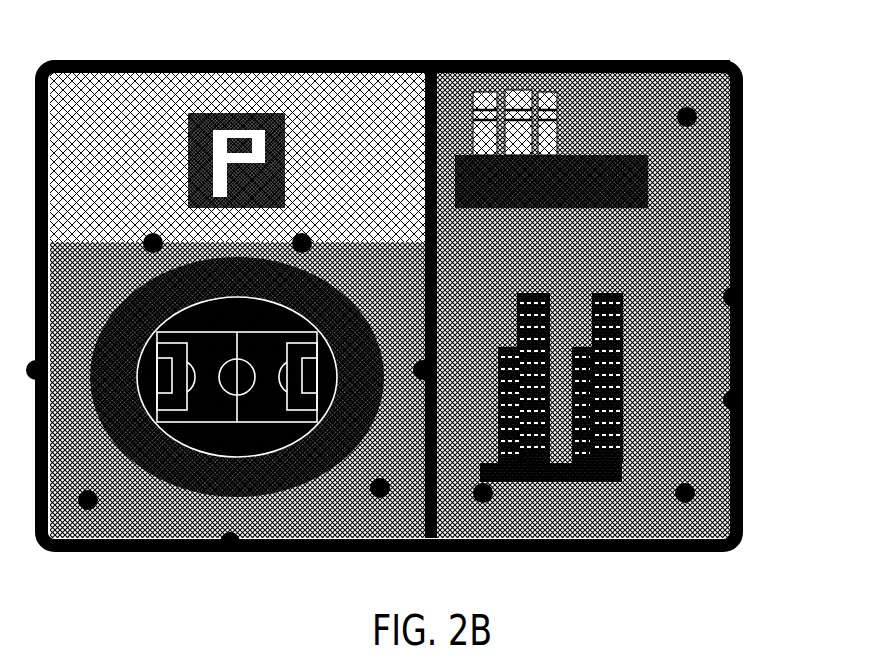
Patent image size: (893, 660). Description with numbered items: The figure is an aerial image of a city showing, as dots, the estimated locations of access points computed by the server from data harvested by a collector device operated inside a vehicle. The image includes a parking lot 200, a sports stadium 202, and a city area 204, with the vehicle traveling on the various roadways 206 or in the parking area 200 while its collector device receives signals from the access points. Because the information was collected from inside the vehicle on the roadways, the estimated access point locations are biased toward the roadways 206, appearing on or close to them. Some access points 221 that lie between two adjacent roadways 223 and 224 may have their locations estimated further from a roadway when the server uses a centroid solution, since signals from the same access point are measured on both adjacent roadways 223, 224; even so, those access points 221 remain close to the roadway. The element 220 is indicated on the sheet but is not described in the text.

The parking lot 200 is at (167, 178).
The sports stadium 202 is at (168, 518).
The city area 204 is at (742, 463).
The roadways 206 is at (243, 58).
The side rail 220 is at (742, 377).
The access points 221 is at (693, 106).
The adjacent roadway 223 is at (495, 60).
The adjacent roadway 224 is at (742, 232).